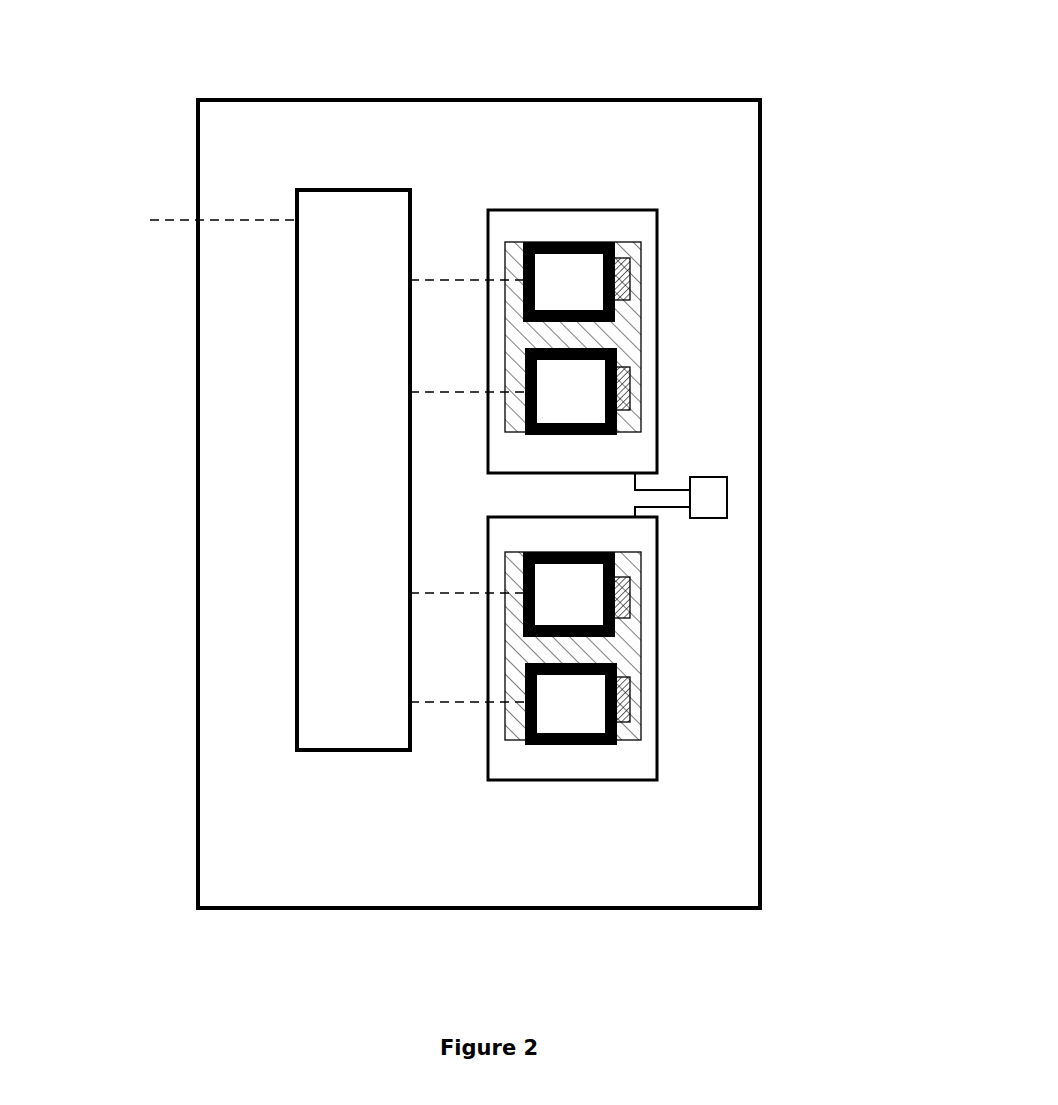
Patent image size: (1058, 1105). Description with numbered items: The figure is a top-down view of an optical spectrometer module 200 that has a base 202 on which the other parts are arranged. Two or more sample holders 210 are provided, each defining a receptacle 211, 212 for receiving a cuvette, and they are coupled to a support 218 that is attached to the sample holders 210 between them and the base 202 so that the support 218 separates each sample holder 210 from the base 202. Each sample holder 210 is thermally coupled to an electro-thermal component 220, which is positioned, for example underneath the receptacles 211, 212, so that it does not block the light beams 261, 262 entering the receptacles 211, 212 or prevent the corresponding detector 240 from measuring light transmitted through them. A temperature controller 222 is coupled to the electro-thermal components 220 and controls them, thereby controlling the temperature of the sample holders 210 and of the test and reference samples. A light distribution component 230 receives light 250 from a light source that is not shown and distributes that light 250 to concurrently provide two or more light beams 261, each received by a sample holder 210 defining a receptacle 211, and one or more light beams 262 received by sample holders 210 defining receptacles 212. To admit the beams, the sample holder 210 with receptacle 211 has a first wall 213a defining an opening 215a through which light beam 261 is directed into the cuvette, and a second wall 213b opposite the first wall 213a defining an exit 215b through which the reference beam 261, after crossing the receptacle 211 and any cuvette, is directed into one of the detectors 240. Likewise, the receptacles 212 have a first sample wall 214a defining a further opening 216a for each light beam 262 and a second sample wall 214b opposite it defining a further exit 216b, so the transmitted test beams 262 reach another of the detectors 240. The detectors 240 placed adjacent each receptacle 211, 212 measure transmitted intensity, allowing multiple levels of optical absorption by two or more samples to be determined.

The optical spectrometer module 200 is at (177, 75).
The base 202 is at (196, 183).
The sample holder 210 is at (600, 239).
The receptacle 211 is at (592, 290).
The receptacle 212 is at (645, 408).
The first wall 213a is at (505, 250).
The second wall 213b is at (658, 252).
The first sample wall 214a is at (505, 730).
The second sample wall 214b is at (645, 732).
The opening 215a is at (536, 272).
The exit 215b is at (601, 272).
The further opening 216a is at (541, 712).
The further exit 216b is at (602, 712).
The support 218 is at (664, 428).
The electro-thermal component 220 is at (645, 268).
The temperature controller 222 is at (738, 497).
The light distribution component 230 is at (294, 420).
The detector 240 is at (640, 314).
The light 250 is at (177, 226).
The light beam 261 is at (447, 278).
The light beam 262 is at (447, 395).